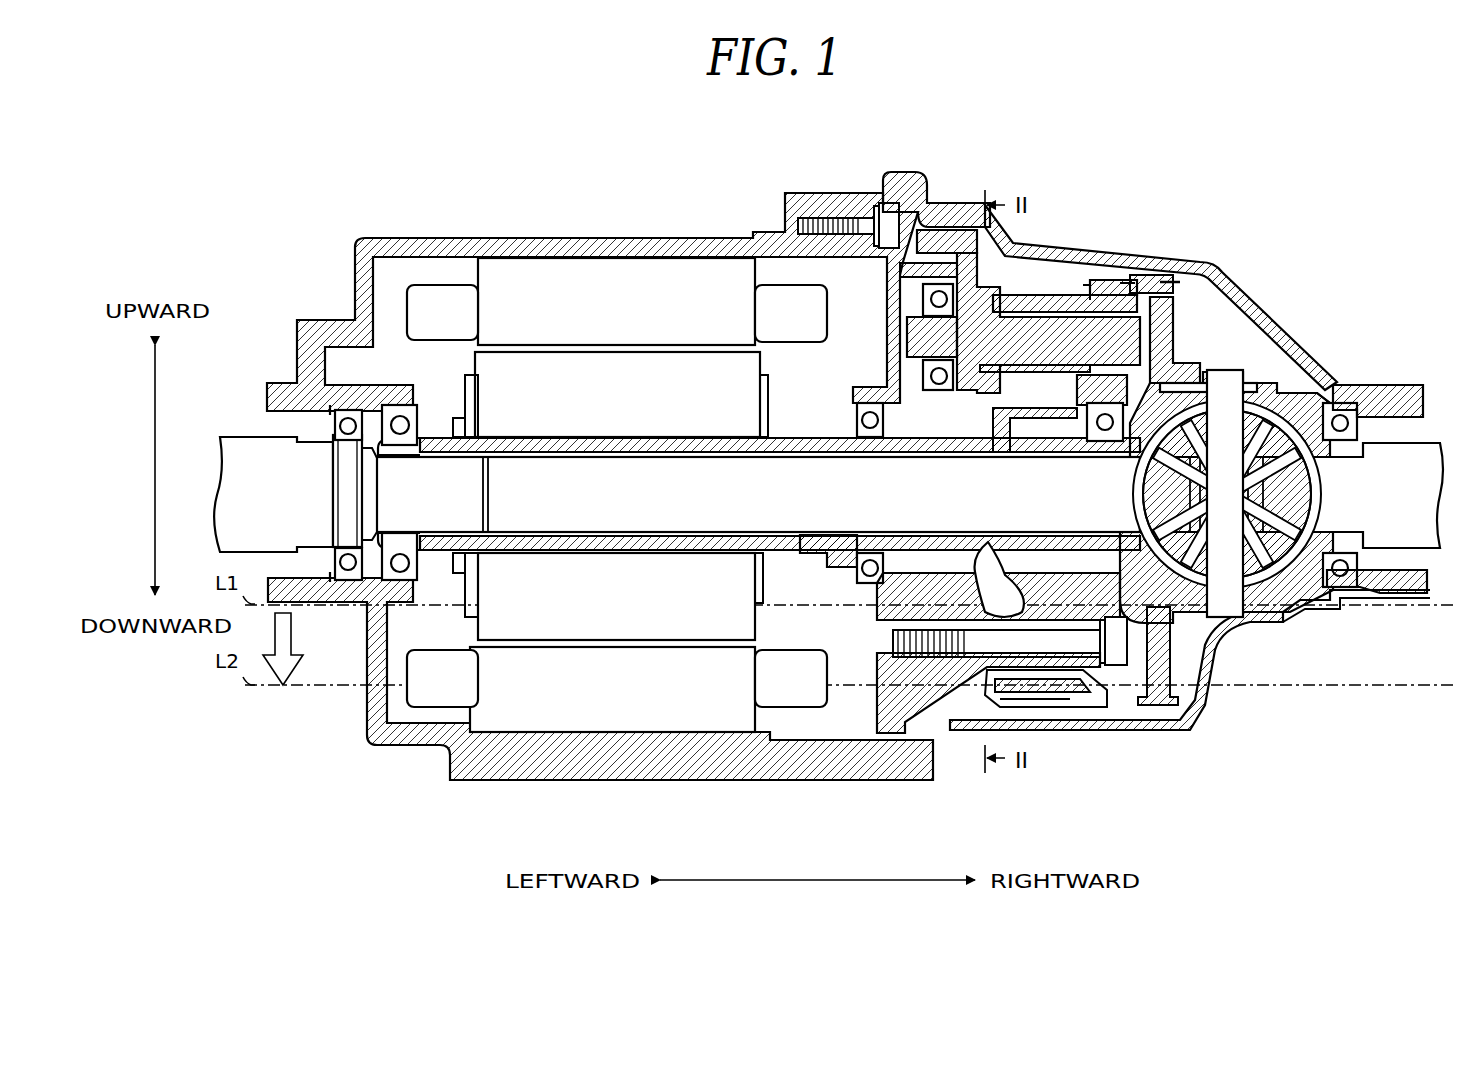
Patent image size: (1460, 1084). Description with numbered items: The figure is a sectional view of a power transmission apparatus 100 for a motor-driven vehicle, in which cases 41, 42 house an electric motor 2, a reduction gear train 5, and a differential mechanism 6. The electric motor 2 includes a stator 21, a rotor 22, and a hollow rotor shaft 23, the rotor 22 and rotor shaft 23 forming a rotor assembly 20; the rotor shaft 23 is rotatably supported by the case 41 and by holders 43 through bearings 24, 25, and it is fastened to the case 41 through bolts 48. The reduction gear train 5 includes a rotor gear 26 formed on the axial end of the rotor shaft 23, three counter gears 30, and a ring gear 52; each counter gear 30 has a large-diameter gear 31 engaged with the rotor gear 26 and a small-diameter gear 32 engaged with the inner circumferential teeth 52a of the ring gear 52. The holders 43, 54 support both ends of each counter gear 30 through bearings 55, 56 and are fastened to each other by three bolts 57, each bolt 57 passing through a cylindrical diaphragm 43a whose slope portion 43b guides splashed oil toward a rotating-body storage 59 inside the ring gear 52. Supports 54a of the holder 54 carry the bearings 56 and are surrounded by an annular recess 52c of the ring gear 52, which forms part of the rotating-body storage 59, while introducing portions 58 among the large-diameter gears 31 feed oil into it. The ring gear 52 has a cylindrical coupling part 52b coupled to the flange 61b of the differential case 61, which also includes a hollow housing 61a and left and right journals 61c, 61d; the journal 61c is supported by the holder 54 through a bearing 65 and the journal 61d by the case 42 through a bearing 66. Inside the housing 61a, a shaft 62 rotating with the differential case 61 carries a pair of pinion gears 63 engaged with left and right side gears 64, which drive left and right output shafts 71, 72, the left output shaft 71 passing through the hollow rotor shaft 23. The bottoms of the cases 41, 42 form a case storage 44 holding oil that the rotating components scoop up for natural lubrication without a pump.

The power transmission apparatus 100 is at (1360, 266).
The electric motor 2 is at (400, 285).
The reduction gear train 5 is at (908, 225).
The differential mechanism 6 is at (1232, 362).
The rotor assembly 20 is at (660, 192).
The stator 21 is at (478, 282).
The rotor 22 is at (622, 345).
The rotor shaft 23 is at (680, 430).
The bearing 24 is at (412, 415).
The bearing 25 is at (860, 412).
The rotor gear 26 is at (948, 556).
The counter gear 30 is at (1065, 140).
The large-diameter gear 31 is at (960, 235).
The small-diameter gear 32 is at (1025, 270).
The case 41 is at (367, 745).
The case 42 is at (1165, 733).
The holder 43 is at (975, 688).
The diaphragm 43a is at (992, 705).
The slope portion 43b is at (985, 693).
The case storage 44 is at (843, 729).
The bolt 48 is at (810, 215).
The ring gear 52 is at (1215, 191).
The inner circumferential teeth 52a is at (1088, 288).
The coupling part 52b is at (1170, 280).
The annular recess 52c is at (1128, 283).
The holder 54 is at (1093, 665).
The support 54a is at (1170, 308).
The bearing 55 is at (900, 290).
The bearing 56 is at (1152, 352).
The bolt 57 is at (892, 642).
The introducing portion 58 is at (1005, 665).
The rotating-body storage 59 is at (1115, 684).
The differential case 61 is at (1233, 733).
The housing 61a is at (1305, 600).
The flange 61b is at (1212, 622).
The journal 61c is at (1272, 614).
The journal 61d is at (1345, 590).
The shaft 62 is at (1262, 400).
The pinion gear 63 is at (1315, 405).
The side gear 64 is at (1343, 415).
The bearing 65 is at (1088, 429).
The bearing 66 is at (1375, 400).
The left output shaft 71 is at (815, 548).
The right output shaft 72 is at (1438, 435).